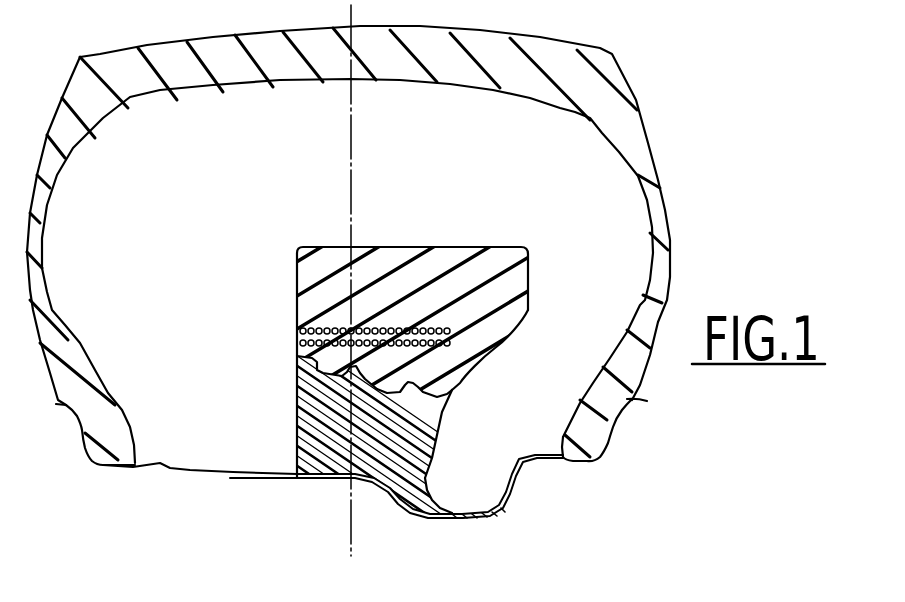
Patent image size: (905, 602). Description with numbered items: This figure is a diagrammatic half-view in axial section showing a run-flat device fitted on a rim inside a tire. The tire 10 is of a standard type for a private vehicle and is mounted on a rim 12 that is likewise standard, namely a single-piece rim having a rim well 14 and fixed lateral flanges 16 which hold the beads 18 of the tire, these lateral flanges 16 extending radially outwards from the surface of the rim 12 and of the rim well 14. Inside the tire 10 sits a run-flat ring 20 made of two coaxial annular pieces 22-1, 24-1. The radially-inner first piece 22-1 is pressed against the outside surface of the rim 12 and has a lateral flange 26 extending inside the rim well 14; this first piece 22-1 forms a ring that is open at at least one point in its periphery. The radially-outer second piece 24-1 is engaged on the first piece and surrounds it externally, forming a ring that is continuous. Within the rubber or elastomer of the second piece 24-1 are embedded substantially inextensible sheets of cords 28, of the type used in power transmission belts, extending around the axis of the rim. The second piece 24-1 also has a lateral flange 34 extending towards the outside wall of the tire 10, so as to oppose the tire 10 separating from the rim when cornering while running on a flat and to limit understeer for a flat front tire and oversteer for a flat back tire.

The tire 10 is at (636, 103).
The rim 12 is at (231, 474).
The rim well 14 is at (464, 520).
The lateral flanges 16 is at (80, 413).
The beads 18 is at (118, 450).
The run-flat ring 20 is at (362, 406).
The radially-inner first annular piece 22-1 is at (299, 418).
The radially-outer second annular piece 24-1 is at (297, 294).
The lateral flange 26 is at (463, 515).
The sheets of cords 28 is at (298, 331).
The lateral flange 34 is at (529, 278).